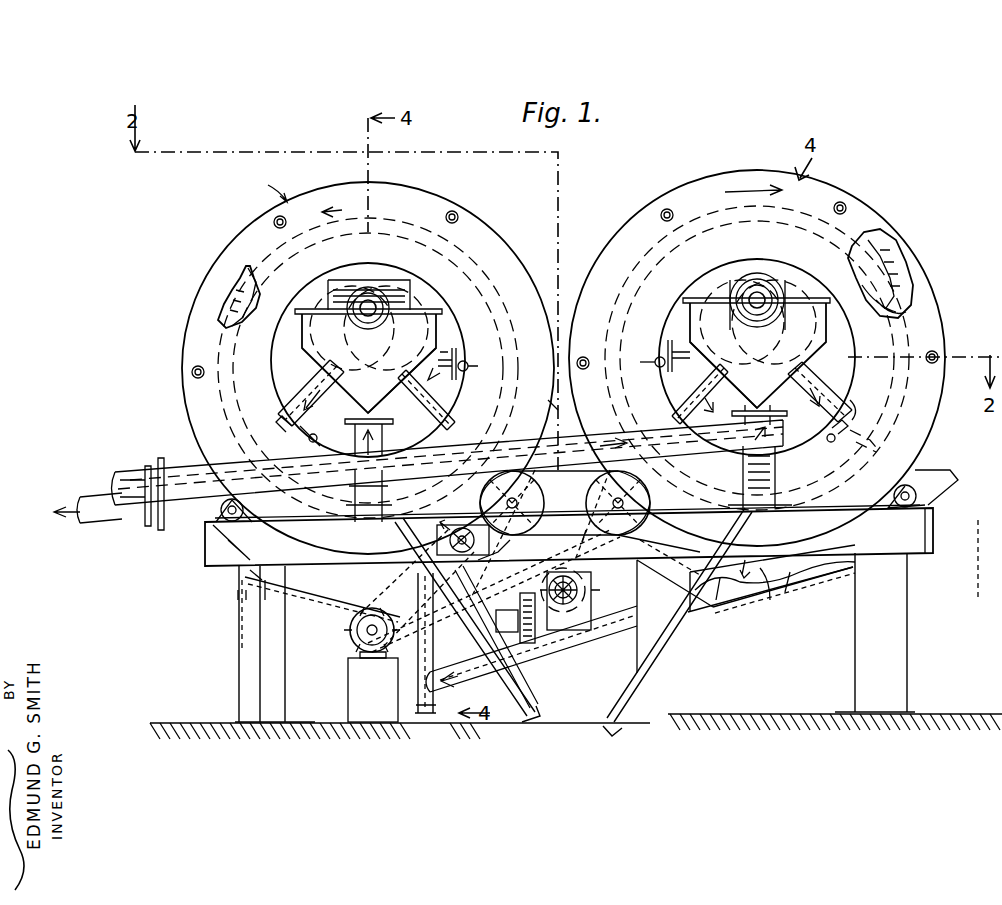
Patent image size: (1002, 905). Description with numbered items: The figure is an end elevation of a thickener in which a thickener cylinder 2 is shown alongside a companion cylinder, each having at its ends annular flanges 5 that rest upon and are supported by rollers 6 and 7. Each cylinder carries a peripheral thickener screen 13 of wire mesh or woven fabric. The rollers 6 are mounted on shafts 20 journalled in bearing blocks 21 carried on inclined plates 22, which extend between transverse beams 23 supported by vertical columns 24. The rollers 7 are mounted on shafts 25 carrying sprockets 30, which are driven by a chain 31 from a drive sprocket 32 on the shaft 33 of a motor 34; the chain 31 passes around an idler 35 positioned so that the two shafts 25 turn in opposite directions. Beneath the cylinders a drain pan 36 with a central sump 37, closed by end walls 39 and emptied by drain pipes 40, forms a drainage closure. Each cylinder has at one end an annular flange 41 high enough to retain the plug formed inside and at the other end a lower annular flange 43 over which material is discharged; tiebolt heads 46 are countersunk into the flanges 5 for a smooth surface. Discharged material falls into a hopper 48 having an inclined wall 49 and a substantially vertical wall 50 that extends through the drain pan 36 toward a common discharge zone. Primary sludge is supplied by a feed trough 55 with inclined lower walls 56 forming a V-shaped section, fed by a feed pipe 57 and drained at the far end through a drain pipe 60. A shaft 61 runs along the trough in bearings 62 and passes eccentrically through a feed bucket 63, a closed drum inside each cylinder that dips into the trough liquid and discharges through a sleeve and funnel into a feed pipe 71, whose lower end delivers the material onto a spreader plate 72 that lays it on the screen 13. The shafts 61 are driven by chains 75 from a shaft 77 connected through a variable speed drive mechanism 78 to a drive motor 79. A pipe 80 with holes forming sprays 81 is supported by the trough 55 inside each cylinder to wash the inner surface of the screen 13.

The thickener cylinder 2 is at (267, 187).
The annular flange 5 is at (220, 256).
The roller 6 is at (270, 532).
The roller 7 is at (548, 532).
The peripheral thickener screen 13 is at (224, 300).
The shaft 20 is at (226, 520).
The bearing block 21 is at (240, 536).
The inclined plate 22 is at (220, 518).
The transverse beam 23 is at (935, 544).
The vertical column 24 is at (240, 702).
The shaft 25 is at (520, 498).
The sprocket 30 is at (612, 506).
The chain 31 is at (640, 532).
The drive sprocket 32 is at (373, 687).
The shaft 33 is at (358, 640).
The motor 34 is at (350, 625).
The idler 35 is at (460, 556).
The drain pan 36 is at (312, 582).
The central sump 37 is at (724, 600).
The end wall 39 is at (282, 590).
The drain pipe 40 is at (424, 716).
The annular flange 41 is at (550, 368).
The annular flange 43 is at (912, 298).
The head 46 is at (274, 220).
The hopper 48 is at (468, 634).
The inclined wall 49 is at (510, 720).
The substantially vertical wall 50 is at (540, 405).
The feed trough 55 is at (328, 376).
The inclined lower wall 56 is at (405, 378).
The feed pipe 57 is at (134, 480).
The drain pipe 60 is at (76, 500).
The shaft 61 is at (378, 304).
The bearing 62 is at (762, 290).
The feed bucket 63 is at (386, 243).
The feed pipe 71 is at (322, 425).
The spreader plate 72 is at (876, 453).
The chain 75 is at (428, 390).
The shaft 77 is at (580, 582).
The variable speed drive mechanism 78 is at (576, 640).
The drive motor 79 is at (596, 602).
The pipe 80 is at (466, 356).
The spray 81 is at (757, 358).